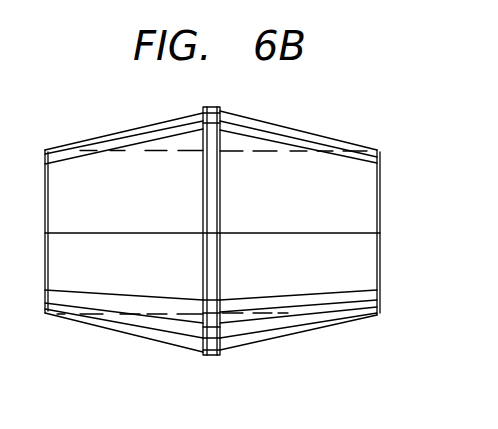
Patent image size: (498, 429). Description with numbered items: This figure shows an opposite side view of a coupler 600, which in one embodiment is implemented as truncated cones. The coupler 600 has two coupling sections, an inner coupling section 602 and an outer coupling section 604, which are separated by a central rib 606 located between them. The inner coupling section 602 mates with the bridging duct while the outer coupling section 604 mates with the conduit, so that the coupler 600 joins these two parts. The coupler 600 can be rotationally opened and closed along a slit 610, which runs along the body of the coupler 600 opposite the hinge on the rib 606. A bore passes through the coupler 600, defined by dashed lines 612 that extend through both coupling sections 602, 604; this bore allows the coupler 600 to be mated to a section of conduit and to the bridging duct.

The coupler 600 is at (290, 127).
The inner coupling section 602 is at (143, 204).
The outer coupling section 604 is at (316, 205).
The central rib 606 is at (222, 281).
The slit 610 is at (357, 233).
The dashed lines 612 is at (153, 150).